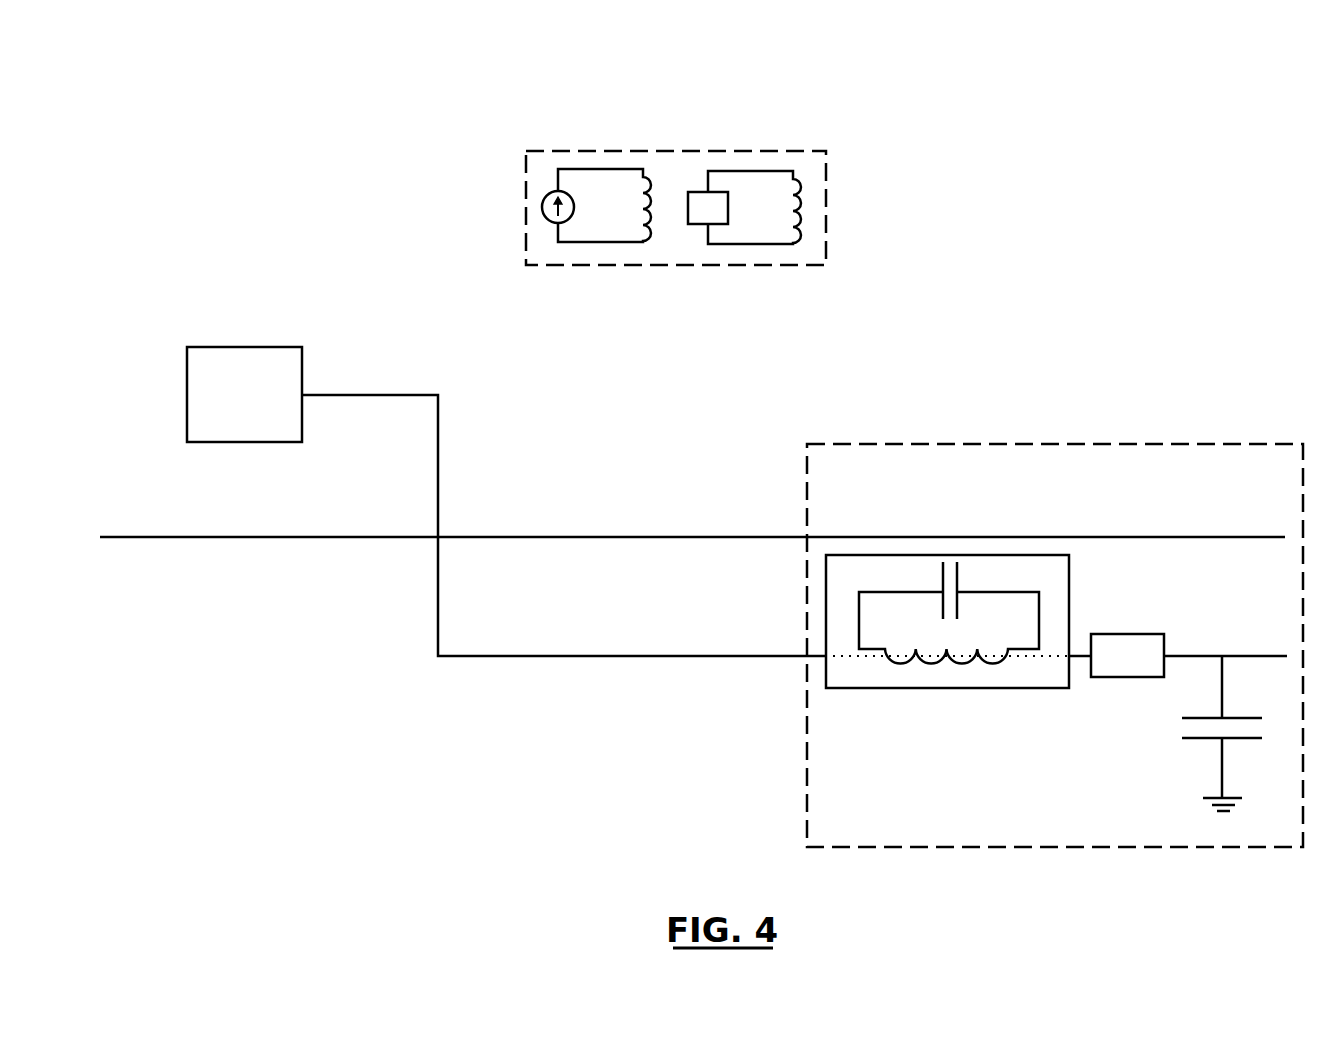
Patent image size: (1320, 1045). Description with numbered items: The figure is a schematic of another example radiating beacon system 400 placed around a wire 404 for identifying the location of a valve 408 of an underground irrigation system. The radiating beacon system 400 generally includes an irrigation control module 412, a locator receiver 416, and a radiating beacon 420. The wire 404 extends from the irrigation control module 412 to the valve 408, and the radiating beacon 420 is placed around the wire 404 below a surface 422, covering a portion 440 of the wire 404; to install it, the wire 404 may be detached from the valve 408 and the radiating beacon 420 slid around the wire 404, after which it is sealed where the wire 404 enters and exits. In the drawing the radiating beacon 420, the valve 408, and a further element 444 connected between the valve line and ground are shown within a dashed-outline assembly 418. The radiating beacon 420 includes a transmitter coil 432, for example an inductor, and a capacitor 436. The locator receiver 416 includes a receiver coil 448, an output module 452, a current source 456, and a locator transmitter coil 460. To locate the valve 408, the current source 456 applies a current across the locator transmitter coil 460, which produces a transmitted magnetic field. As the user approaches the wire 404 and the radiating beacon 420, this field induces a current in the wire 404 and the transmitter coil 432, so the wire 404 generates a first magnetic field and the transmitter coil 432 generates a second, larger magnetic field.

The radiating beacon system 400 is at (303, 58).
The wire 404 is at (592, 656).
The valve 408 is at (1120, 677).
The irrigation control module 412 is at (217, 345).
The locator receiver 416 is at (600, 150).
The receiver circuit 418 is at (867, 442).
The radiating beacon 420 is at (883, 690).
The surface 422 is at (615, 535).
The transmitter coil 432 is at (933, 665).
The capacitor 436 is at (959, 578).
The portion 440 is at (1017, 656).
The capacitor 444 is at (1223, 686).
The receiver coil 448 is at (800, 195).
The output module 452 is at (703, 192).
The current source 456 is at (550, 218).
The locator transmitter coil 460 is at (652, 212).